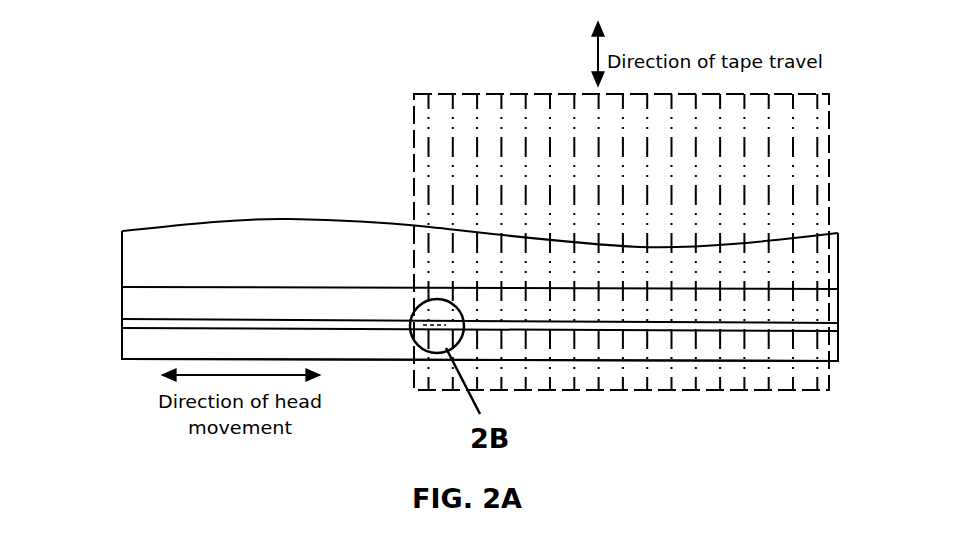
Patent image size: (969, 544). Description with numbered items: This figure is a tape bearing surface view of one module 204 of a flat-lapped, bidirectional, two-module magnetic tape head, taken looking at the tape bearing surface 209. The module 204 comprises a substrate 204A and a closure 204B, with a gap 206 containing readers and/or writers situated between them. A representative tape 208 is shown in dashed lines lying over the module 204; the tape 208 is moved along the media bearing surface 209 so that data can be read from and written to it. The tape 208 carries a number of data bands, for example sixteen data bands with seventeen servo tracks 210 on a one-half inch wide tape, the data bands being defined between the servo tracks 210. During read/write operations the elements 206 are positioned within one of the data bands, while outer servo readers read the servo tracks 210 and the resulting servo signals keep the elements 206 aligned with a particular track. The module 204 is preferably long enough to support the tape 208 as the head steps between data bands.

The module 204 is at (165, 213).
The substrate 204A is at (258, 220).
The closure 204B is at (120, 342).
The gap 206 is at (413, 323).
The tape 208 is at (413, 96).
The tape bearing surface 209 is at (315, 307).
The servo tracks 210 is at (525, 178).